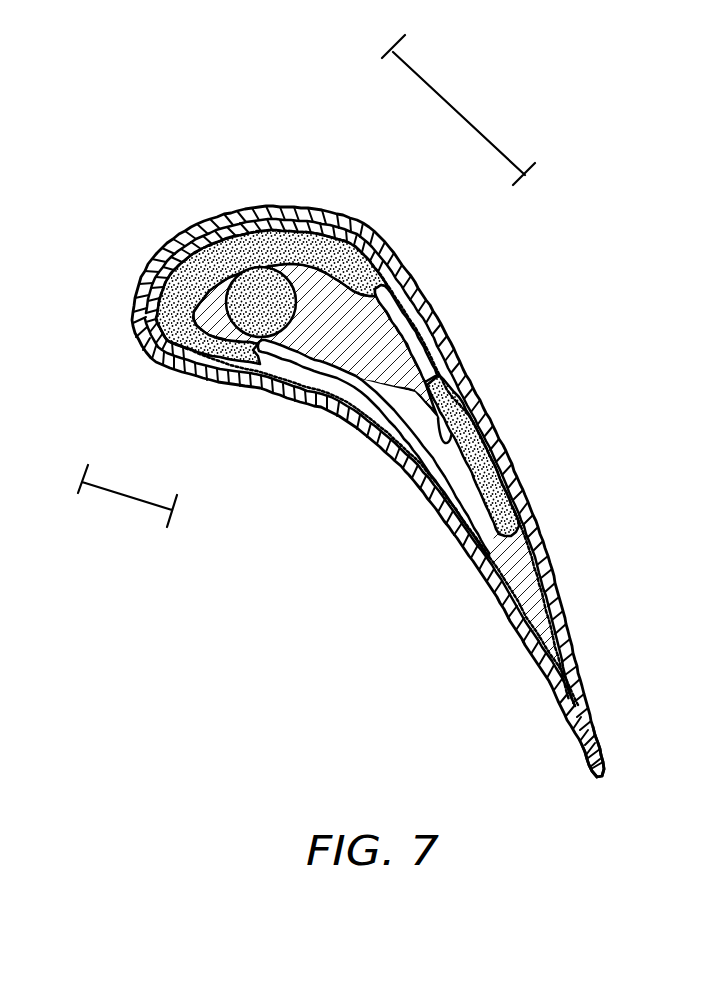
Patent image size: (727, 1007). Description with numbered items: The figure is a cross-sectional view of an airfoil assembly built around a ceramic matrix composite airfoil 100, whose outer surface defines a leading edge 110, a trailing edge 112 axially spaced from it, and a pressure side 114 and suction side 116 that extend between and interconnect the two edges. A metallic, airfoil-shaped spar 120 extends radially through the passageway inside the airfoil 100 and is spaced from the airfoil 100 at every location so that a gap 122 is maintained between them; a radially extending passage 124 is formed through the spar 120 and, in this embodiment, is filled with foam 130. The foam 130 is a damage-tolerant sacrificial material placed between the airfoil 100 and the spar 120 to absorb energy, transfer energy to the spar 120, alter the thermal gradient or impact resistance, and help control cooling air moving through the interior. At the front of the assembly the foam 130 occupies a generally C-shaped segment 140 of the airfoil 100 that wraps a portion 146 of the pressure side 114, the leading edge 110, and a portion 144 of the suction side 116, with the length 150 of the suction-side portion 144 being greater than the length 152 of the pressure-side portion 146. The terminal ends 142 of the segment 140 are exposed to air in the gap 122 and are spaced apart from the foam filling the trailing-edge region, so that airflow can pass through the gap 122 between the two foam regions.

The airfoil 100 is at (418, 304).
The leading edge 110 is at (147, 336).
The trailing edge 112 is at (603, 776).
The pressure side 114 is at (231, 382).
The suction side 116 is at (362, 244).
The spar 120 is at (318, 274).
The gap 122 is at (445, 446).
The radially extending passage 124 is at (177, 340).
The foam 130 is at (226, 227).
The segment 140 is at (152, 290).
The terminal ends 142 is at (388, 291).
The portion of the suction side 144 is at (259, 280).
The portion of the pressure side 146 is at (143, 354).
The length 150 is at (459, 107).
The length 152 is at (127, 497).